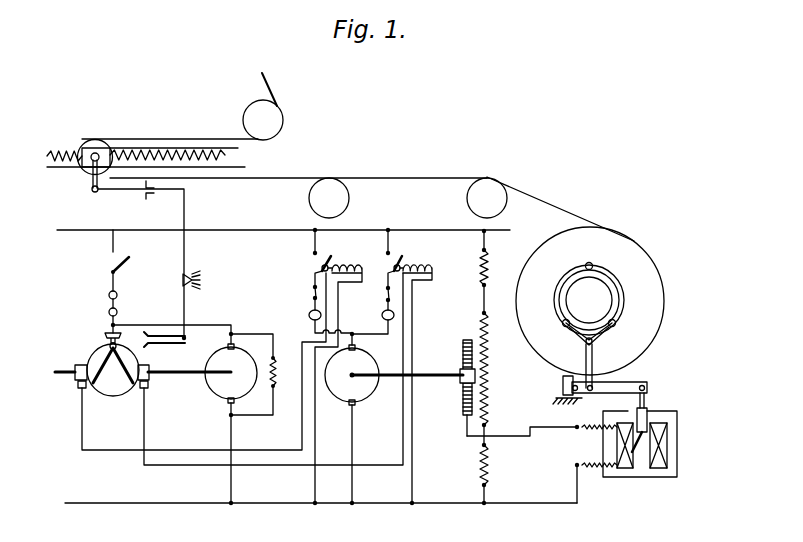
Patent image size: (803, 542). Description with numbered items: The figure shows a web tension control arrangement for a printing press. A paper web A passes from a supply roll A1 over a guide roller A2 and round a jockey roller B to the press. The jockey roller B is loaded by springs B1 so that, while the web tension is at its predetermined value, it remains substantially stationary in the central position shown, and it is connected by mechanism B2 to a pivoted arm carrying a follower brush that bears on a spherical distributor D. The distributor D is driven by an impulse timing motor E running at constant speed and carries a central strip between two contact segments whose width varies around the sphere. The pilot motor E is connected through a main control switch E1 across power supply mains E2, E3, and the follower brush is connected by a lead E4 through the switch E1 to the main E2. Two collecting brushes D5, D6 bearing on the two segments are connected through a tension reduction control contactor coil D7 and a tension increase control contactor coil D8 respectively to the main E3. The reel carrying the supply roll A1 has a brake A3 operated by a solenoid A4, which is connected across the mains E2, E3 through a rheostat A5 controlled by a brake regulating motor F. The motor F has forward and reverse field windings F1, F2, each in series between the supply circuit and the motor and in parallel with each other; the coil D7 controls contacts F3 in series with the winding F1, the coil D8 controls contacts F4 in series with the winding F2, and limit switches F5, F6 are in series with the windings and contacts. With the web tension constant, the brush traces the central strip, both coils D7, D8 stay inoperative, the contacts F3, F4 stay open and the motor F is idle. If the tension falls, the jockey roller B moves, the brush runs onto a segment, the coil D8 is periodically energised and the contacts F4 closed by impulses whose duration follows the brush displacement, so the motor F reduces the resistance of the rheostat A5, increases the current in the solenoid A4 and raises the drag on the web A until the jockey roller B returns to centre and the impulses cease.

The paper web A is at (380, 178).
The supply roll A1 is at (614, 252).
The guide roller A2 is at (323, 197).
The brake A3 is at (620, 292).
The solenoid A4 is at (661, 416).
The rheostat A5 is at (482, 364).
The jockey roller B is at (99, 140).
The springs B1 is at (62, 150).
The mechanism B2 is at (186, 225).
The spherical distributor D is at (93, 356).
The collecting brush D5 is at (80, 388).
The collecting brush D6 is at (150, 386).
The tension reduction control contactor coil D7 is at (350, 261).
The tension increase control contactor coil D8 is at (425, 261).
The impulse timing motor E is at (226, 385).
The main control switch E1 is at (129, 264).
The power supply main E2 is at (61, 229).
The power supply main E3 is at (199, 503).
The lead E4 is at (110, 327).
The brake regulating motor F is at (358, 365).
The forward field winding F1 is at (309, 315).
The reverse field winding F2 is at (393, 318).
The contacts F3 is at (318, 263).
The contacts F4 is at (394, 271).
The limit switch F5 is at (313, 290).
The limit switch F6 is at (391, 296).